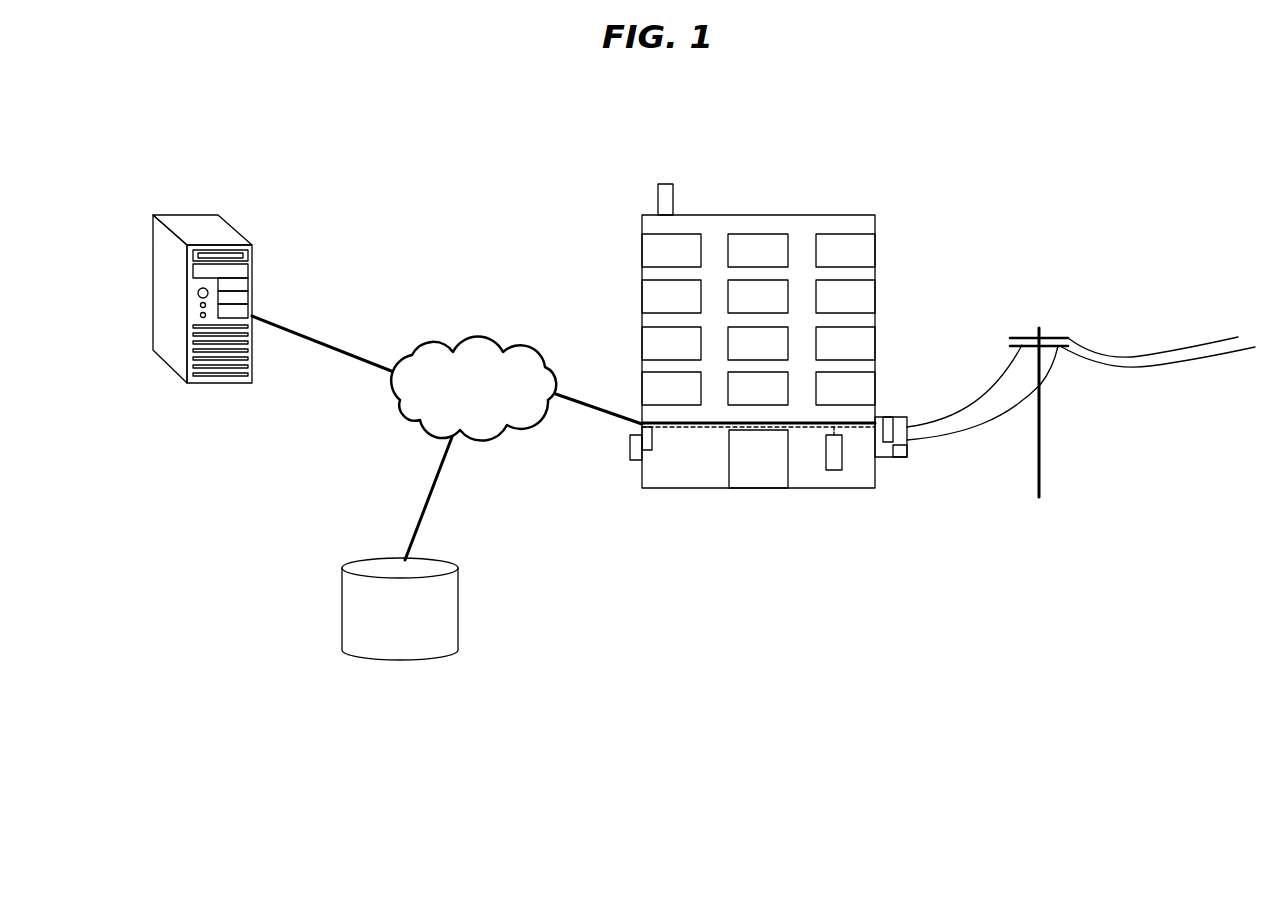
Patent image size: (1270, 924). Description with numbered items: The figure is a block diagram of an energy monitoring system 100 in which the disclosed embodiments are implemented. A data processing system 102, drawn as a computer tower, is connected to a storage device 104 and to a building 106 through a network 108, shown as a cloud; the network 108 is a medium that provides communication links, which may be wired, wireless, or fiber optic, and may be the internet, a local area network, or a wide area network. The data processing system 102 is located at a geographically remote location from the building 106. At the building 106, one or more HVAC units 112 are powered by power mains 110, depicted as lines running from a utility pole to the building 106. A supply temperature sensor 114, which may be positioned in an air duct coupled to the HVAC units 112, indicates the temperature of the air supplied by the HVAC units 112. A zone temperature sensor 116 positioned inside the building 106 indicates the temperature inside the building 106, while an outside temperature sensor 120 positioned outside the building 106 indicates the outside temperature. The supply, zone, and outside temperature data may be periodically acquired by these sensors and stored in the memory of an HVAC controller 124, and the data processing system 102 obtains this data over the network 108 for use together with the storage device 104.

The system 100 is at (318, 112).
The data processing system 102 is at (177, 213).
The storage device 104 is at (458, 606).
The building 106 is at (845, 195).
The network 108 is at (475, 340).
The power mains 110 is at (979, 352).
The HVAC units 112 is at (882, 458).
The supply temperature sensor 114 is at (886, 417).
The zone temperature sensor 116 is at (830, 470).
The outside temperature sensor 120 is at (630, 448).
The HVAC controller 124 is at (910, 455).